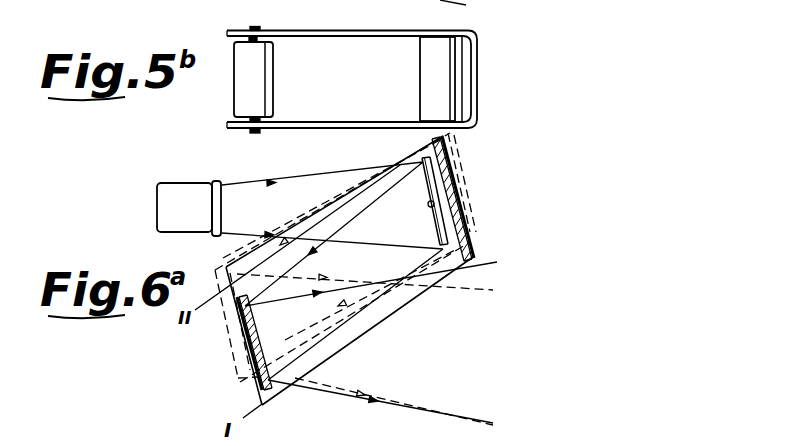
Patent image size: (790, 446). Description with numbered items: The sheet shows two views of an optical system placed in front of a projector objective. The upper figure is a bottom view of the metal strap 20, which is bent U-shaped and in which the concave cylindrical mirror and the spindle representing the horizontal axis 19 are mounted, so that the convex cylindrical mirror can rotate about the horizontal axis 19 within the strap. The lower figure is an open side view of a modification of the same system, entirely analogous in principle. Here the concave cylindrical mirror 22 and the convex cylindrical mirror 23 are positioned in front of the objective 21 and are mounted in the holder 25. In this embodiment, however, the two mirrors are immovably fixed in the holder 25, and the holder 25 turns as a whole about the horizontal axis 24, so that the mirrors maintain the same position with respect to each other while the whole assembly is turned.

In FIG. 5B, the horizontal axis 19 is at (256, 27).
In FIG. 5B, the metal strap 20 is at (472, 58).
In FIG. 6A, the objective 21 is at (172, 208).
In FIG. 6A, the concave cylindrical mirror 22 is at (447, 238).
In FIG. 6A, the convex cylindrical mirror 23 is at (256, 386).
In FIG. 6A, the horizontal axis 24 is at (442, 200).
In FIG. 6A, the holder 25 is at (404, 306).